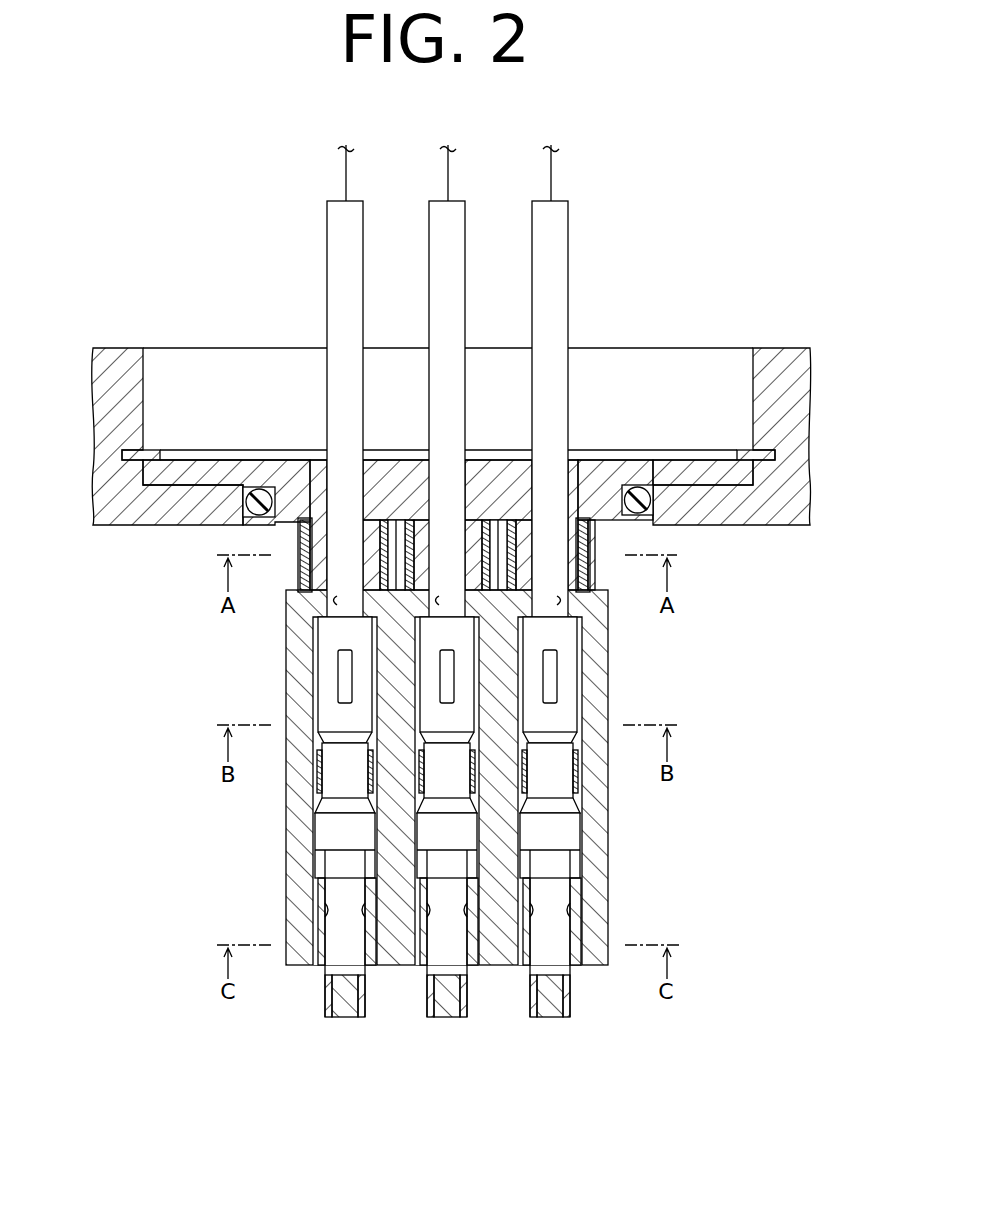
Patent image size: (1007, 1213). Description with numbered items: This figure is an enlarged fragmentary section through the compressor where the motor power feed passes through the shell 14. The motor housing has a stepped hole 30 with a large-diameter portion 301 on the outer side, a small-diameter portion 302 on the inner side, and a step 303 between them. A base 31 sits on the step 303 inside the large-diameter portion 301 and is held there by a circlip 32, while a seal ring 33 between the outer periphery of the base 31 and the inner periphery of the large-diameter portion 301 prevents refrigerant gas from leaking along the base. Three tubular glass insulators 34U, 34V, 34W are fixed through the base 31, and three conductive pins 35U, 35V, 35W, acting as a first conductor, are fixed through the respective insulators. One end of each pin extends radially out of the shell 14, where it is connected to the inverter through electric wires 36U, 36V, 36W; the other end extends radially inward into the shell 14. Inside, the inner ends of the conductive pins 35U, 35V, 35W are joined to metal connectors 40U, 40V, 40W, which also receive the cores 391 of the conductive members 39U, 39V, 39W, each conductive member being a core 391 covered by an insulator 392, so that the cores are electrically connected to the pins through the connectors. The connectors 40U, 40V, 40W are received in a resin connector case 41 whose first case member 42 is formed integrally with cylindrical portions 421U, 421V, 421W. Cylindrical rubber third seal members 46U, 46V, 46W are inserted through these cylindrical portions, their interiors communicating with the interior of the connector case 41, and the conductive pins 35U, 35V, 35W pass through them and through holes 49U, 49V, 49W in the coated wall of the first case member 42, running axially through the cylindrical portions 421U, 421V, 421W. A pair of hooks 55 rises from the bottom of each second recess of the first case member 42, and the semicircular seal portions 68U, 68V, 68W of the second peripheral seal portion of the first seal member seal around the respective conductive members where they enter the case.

The shell 14 is at (122, 348).
The hole 30 is at (666, 430).
The large-diameter portion 301 is at (753, 397).
The small-diameter portion 302 is at (607, 507).
The step 303 is at (693, 472).
The base 31 is at (217, 468).
The circlip 32 is at (152, 450).
The seal ring 33 is at (252, 501).
The tubular insulator 34U is at (312, 472).
The tubular insulator 34V is at (418, 478).
The tubular insulator 34W is at (519, 475).
The conductive pin 35U is at (327, 271).
The conductive pin 35V is at (429, 271).
The conductive pin 35W is at (532, 271).
The electric wire 36U is at (346, 174).
The electric wire 36V is at (448, 174).
The electric wire 36W is at (551, 174).
The conductive member 39U is at (276, 1076).
The conductive member 39V is at (378, 1076).
The conductive member 39W is at (618, 1069).
The core 391 is at (343, 1015).
The insulator 392 is at (356, 1017).
The connector 40U is at (328, 688).
The connector 40V is at (463, 632).
The connector 40W is at (567, 682).
The connector case 41 is at (286, 867).
The first case member 42 is at (394, 777).
The cylindrical portion 421U is at (300, 537).
The cylindrical portion 421V is at (380, 545).
The cylindrical portion 421W is at (593, 537).
The third seal member 46U is at (303, 578).
The third seal member 46V is at (480, 535).
The third seal member 46W is at (588, 570).
The hole 49U is at (333, 602).
The hole 49V is at (433, 598).
The hole 49W is at (563, 603).
The hooks 55 is at (368, 780).
The semicircular seal portion 68U is at (315, 910).
The semicircular seal portion 68V is at (473, 935).
The semicircular seal portion 68W is at (580, 910).